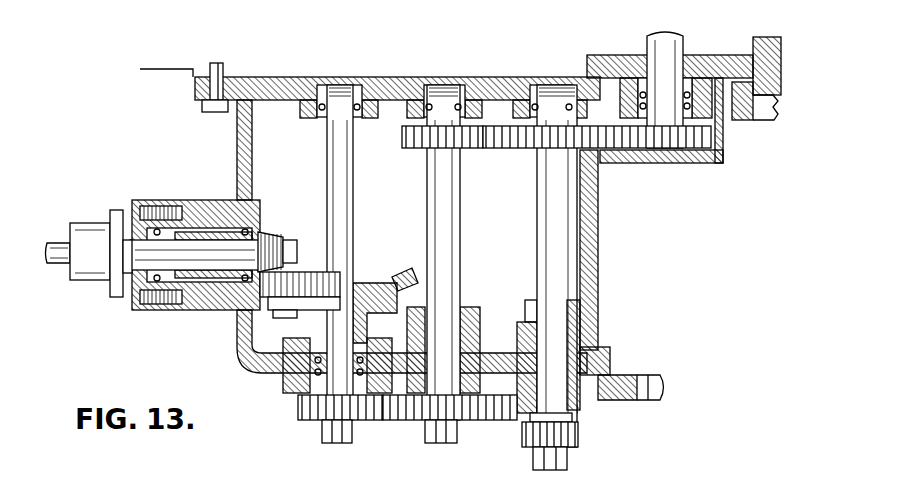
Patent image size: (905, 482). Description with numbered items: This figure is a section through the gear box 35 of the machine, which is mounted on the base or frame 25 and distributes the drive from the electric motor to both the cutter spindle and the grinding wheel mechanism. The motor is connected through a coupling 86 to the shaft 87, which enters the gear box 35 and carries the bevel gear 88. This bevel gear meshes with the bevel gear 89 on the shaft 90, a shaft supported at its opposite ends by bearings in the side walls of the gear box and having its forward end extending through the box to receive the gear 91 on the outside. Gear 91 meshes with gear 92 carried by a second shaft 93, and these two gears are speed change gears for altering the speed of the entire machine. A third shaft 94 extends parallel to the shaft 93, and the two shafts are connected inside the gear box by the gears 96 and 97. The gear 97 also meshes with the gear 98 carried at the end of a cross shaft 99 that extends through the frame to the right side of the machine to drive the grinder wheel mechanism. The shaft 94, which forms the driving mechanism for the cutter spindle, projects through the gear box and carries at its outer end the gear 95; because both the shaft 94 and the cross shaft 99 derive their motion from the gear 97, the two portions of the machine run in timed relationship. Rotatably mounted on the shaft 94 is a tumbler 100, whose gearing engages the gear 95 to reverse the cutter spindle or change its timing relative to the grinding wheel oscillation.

The base or frame 25 is at (717, 62).
The gear box 35 is at (233, 353).
The coupling 86 is at (100, 260).
The shaft 87 is at (217, 247).
The bevel gear 88 is at (267, 240).
The bevel gear 89 is at (300, 275).
The shaft 90 is at (335, 205).
The gear 91 is at (317, 413).
The gear 92 is at (425, 412).
The second shaft 93 is at (440, 250).
The third shaft 94 is at (547, 253).
The gear 95 is at (563, 435).
The gear 96 is at (437, 138).
The gear 97 is at (530, 143).
The gear 98 is at (690, 142).
The cross shaft 99 is at (657, 47).
The tumbler 100 is at (623, 375).